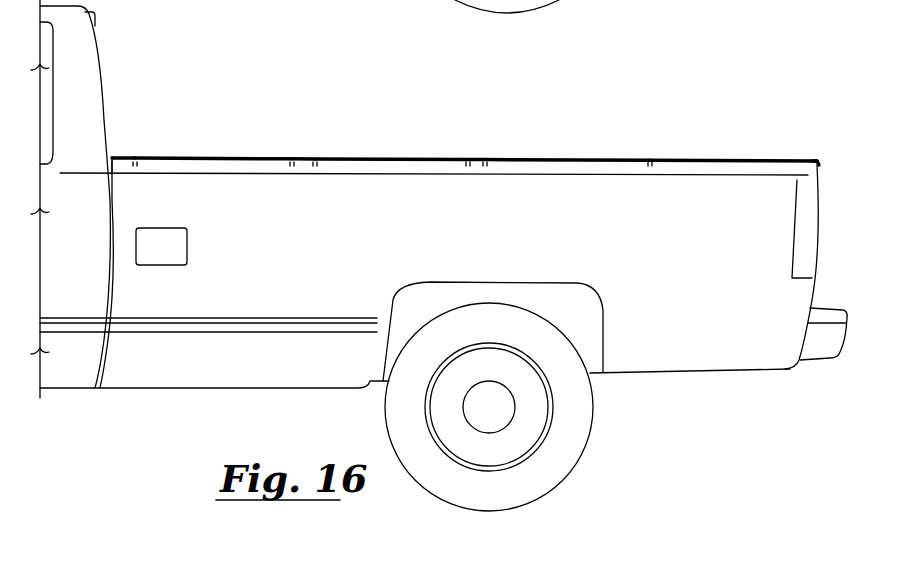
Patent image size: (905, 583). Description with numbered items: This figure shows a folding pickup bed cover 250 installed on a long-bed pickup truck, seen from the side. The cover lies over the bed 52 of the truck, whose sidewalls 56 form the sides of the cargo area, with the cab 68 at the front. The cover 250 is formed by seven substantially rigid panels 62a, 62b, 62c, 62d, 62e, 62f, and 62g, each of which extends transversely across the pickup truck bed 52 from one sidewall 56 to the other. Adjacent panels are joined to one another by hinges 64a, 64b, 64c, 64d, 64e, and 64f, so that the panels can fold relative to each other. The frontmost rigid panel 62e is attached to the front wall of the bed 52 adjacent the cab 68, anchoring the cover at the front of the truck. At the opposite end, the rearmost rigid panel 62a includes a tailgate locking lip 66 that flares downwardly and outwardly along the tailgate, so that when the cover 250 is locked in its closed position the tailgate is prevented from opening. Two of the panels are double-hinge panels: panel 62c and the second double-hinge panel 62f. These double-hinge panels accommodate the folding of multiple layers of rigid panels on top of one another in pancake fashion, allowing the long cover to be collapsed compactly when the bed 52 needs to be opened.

The cab 68 is at (100, 67).
The pickup bed cover 250 is at (465, 99).
The rearmost rigid panel 62a is at (693, 157).
The rigid panel 62b is at (559, 157).
The double-hinge panel 62c is at (477, 157).
The rigid panel 62d is at (375, 157).
The frontmost rigid panel 62e is at (123, 157).
The second double-hinge panel 62f is at (303, 157).
The rigid panel 62g is at (190, 157).
The hinge 64a is at (650, 157).
The hinge 64b is at (485, 157).
The hinge 64c is at (468, 157).
The hinge 64d is at (135, 157).
The hinge 64e is at (315, 157).
The hinge 64f is at (292, 157).
The tailgate locking lip 66 is at (817, 160).
The bed 52 is at (829, 193).
The sidewalls 56 is at (576, 237).